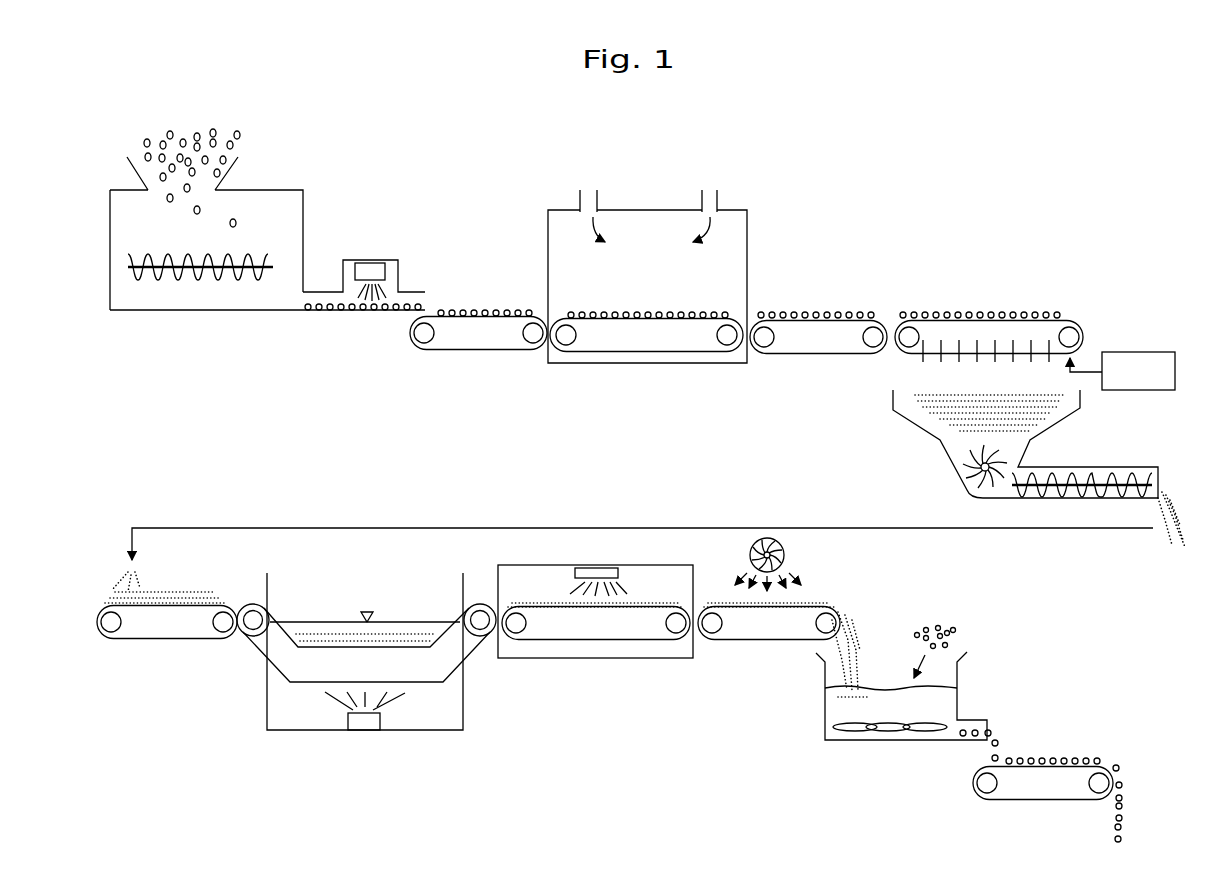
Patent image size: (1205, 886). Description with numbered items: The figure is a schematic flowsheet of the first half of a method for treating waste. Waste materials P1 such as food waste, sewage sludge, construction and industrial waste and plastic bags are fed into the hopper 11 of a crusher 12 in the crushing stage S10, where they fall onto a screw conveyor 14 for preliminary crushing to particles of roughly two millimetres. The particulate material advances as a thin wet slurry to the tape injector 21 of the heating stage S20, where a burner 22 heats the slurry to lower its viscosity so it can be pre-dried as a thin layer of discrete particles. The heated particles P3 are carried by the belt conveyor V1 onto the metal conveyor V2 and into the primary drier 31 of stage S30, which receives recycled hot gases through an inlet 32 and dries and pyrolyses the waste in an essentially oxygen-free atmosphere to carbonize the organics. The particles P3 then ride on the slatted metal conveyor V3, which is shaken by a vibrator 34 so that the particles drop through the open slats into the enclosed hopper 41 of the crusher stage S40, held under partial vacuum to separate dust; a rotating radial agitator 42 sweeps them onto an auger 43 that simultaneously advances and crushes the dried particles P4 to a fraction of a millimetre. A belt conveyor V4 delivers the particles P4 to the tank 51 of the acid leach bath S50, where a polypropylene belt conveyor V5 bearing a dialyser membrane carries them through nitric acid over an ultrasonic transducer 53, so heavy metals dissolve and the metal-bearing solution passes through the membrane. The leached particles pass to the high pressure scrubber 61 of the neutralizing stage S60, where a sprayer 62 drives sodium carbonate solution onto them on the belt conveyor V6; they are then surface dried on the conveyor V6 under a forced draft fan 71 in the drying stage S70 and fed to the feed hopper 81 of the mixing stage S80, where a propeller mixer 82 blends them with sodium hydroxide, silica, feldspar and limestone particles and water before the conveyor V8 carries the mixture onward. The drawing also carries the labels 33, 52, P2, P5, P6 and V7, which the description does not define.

The hopper 11 is at (262, 190).
The crusher 12 is at (110, 252).
The screw conveyor 14 is at (160, 277).
The tape injector 21 is at (350, 260).
The burner 22 is at (372, 263).
The primary drier 31 is at (748, 240).
The inlet 32 is at (698, 200).
The supply pipe 33 is at (580, 202).
The vibrator 34 is at (1140, 352).
The hopper 41 is at (1053, 425).
The rotating radial agitator 42 is at (973, 473).
The auger 43 is at (1118, 467).
The tank 51 is at (267, 700).
The water 52 is at (323, 630).
The ultrasonic transducer 53 is at (387, 717).
The high pressure scrubber 61 is at (645, 660).
The sprayer 62 is at (592, 565).
The forced draft fan 71 is at (750, 552).
The feed hopper 81 is at (825, 723).
The propeller mixer 82 is at (922, 723).
The waste materials P1 is at (217, 132).
The pellets after feeding P2 is at (320, 316).
The heated particles P3 is at (452, 311).
The dried particles P4 is at (1173, 547).
The dried pellets P5 is at (940, 627).
The finished pellets P6 is at (1043, 757).
The crushing stage S10 is at (192, 318).
The heating stage S20 is at (373, 321).
The primary drying stage S30 is at (744, 207).
The crusher stage S40 is at (930, 449).
The acid leach bath S50 is at (323, 748).
The neutralizing stage S60 is at (612, 674).
The drying stage S70 is at (824, 577).
The mixing stage S80 is at (843, 748).
The belt conveyor V1 is at (462, 343).
The metal conveyor V2 is at (623, 345).
The slatted metal conveyor V3 is at (1074, 320).
The belt conveyor V4 is at (163, 634).
The polypropylene belt conveyor V5 is at (257, 645).
The belt conveyor V6 is at (552, 632).
The seventh conveyor V7 is at (763, 637).
The conveyor V8 is at (1018, 791).